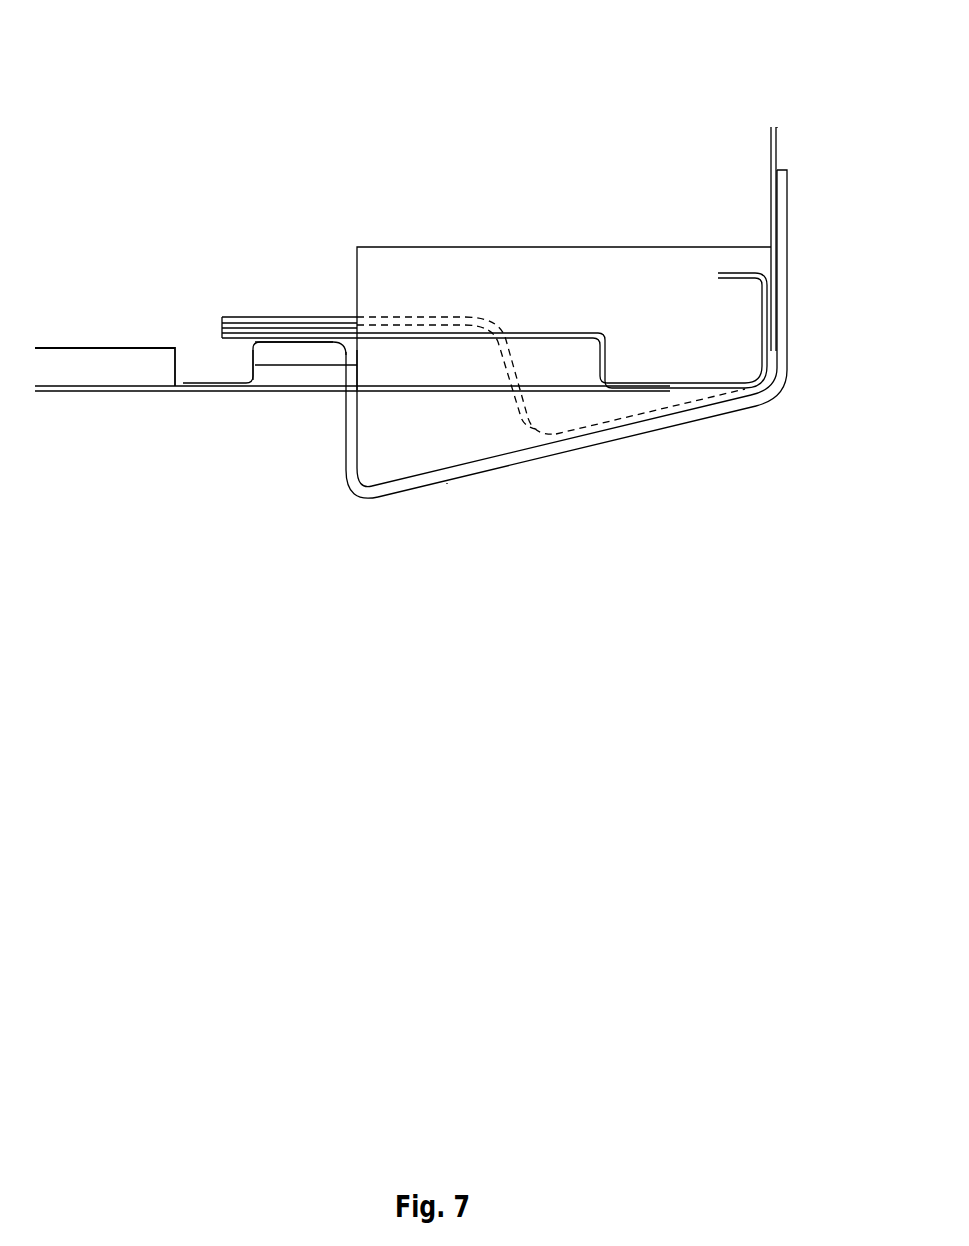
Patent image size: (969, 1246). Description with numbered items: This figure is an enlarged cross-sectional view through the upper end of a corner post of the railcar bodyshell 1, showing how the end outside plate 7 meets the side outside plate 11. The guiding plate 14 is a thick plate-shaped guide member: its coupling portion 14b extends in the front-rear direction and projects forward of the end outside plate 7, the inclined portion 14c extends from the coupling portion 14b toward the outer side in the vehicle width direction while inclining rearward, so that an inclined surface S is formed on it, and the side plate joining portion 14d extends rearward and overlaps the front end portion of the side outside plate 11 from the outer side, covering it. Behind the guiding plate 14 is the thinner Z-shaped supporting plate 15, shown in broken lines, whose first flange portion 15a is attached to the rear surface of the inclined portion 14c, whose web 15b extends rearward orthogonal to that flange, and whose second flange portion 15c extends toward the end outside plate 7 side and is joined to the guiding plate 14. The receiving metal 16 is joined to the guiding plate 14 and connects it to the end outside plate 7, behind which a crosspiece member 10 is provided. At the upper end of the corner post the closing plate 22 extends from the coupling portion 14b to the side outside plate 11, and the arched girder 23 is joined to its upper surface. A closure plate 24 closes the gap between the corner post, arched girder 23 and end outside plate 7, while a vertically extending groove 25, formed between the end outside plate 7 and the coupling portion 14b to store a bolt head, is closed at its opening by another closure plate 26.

The image forming apparatus 1 is at (804, 104).
The end outside plate 7 is at (125, 394).
The crosspiece member 10 is at (140, 360).
The side outside plate 11 is at (774, 188).
The guiding plate 14 is at (573, 352).
The coupling portion 14b is at (345, 441).
The inclined portion 14c is at (528, 453).
The side plate joining portion 14d is at (781, 292).
The supporting plate 15 is at (524, 385).
The first flange portion 15a is at (603, 428).
The web 15b is at (507, 382).
The second flange portion 15c is at (310, 320).
The receiving metal 16 is at (253, 365).
The closing plate 22 is at (652, 262).
The arched girder 23 is at (606, 358).
The closure plate 24 is at (260, 388).
The groove 25 is at (282, 350).
The closure plate 26 is at (288, 381).
The inclined surface S is at (447, 484).